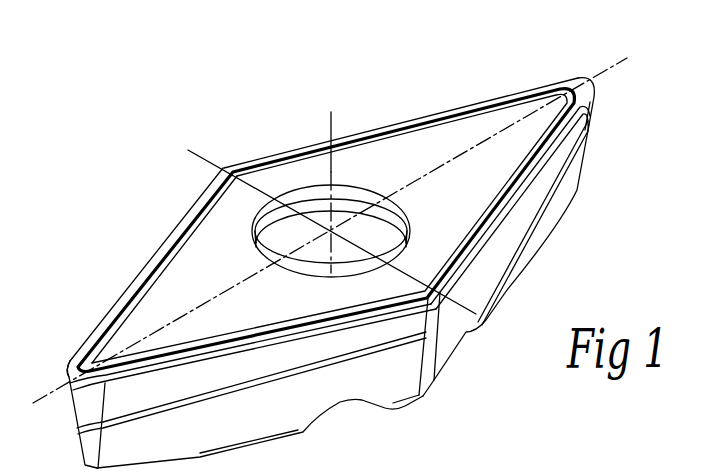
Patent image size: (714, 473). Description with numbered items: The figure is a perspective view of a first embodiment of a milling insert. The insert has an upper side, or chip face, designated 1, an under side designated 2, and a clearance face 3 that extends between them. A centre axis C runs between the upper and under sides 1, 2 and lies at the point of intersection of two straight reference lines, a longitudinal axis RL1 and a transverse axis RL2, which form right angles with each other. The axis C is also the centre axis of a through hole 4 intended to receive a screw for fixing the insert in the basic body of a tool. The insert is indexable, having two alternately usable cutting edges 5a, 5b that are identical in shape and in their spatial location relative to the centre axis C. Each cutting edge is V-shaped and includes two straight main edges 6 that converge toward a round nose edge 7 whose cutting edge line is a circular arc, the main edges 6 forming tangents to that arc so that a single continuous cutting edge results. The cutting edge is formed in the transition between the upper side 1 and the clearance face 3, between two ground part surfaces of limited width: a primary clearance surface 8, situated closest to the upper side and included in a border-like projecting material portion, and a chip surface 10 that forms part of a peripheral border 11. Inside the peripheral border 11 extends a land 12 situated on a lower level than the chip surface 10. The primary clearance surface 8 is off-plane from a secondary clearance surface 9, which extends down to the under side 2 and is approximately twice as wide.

The upper side 1 is at (414, 96).
The under side 2 is at (572, 231).
The clearance face 3 is at (601, 147).
The through hole 4 is at (284, 226).
The cutting edge 5a is at (88, 314).
The cutting edge 5b is at (537, 74).
The main edge 6 is at (166, 239).
The nose edge 7 is at (67, 374).
The primary clearance surface 8 is at (252, 370).
The secondary clearance surface 9 is at (259, 422).
The chip surface 10 is at (193, 214).
The peripheral border 11 is at (193, 231).
The land 12 is at (479, 193).
The centre axis C is at (342, 190).
The reference line RL1 is at (318, 244).
The reference line RL2 is at (320, 218).